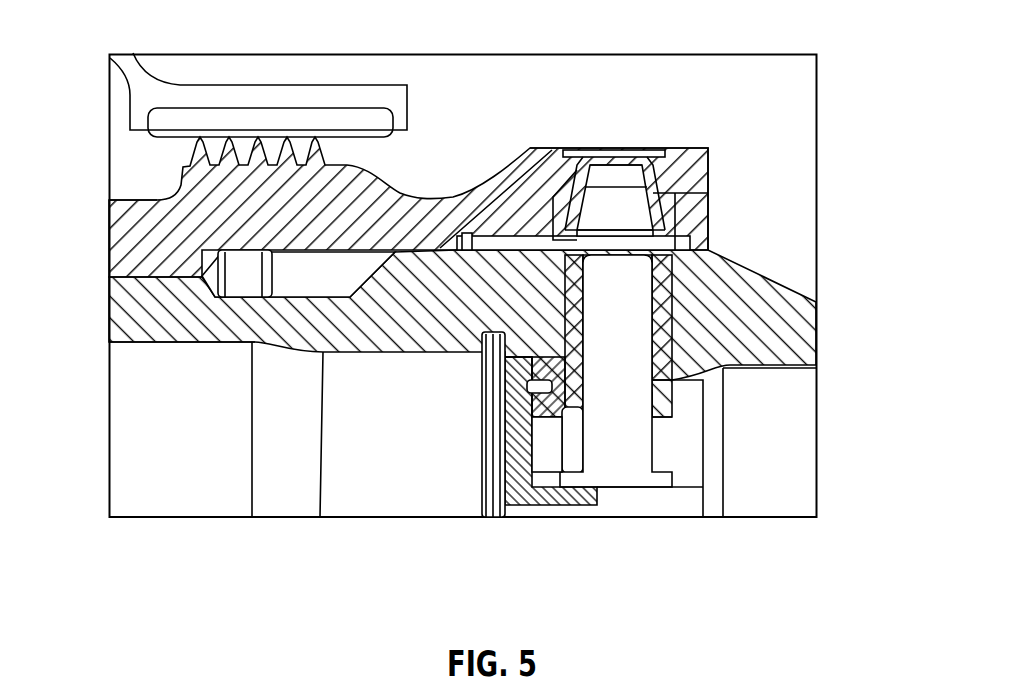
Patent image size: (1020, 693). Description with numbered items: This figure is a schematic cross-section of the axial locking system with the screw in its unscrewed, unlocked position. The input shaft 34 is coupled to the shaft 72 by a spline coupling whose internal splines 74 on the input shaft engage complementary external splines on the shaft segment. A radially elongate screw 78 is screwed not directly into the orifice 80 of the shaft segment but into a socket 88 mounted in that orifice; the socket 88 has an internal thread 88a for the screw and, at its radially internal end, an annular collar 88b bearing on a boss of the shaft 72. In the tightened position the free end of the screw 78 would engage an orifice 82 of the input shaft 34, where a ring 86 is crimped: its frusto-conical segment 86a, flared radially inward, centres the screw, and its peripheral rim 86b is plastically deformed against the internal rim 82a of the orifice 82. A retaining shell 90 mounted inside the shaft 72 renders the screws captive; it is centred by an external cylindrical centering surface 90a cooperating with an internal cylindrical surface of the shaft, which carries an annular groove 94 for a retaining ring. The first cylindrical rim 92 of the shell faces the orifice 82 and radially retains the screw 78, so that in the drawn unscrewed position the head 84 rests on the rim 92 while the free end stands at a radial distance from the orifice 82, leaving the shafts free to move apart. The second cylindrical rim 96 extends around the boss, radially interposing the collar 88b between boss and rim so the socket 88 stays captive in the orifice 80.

The input shaft 34 is at (253, 213).
The shaft 72 is at (395, 325).
The internal splines 74 is at (130, 282).
The screw 78 is at (632, 425).
The orifice 80 is at (744, 283).
The orifice 82 is at (707, 172).
The internal rim 82a is at (550, 150).
The head 84 is at (645, 479).
The ring 86 is at (690, 204).
The frusto-conical segment 86a is at (682, 224).
The peripheral rim 86b is at (641, 165).
The socket 88 is at (665, 322).
The internal thread 88a is at (690, 350).
The annular collar 88b is at (653, 387).
The retaining shell 90 is at (530, 455).
The external cylindrical centering surface 90a is at (522, 355).
The first cylindrical rim 92 is at (580, 477).
The annular groove 94 is at (482, 410).
The second cylindrical rim 96 is at (542, 417).